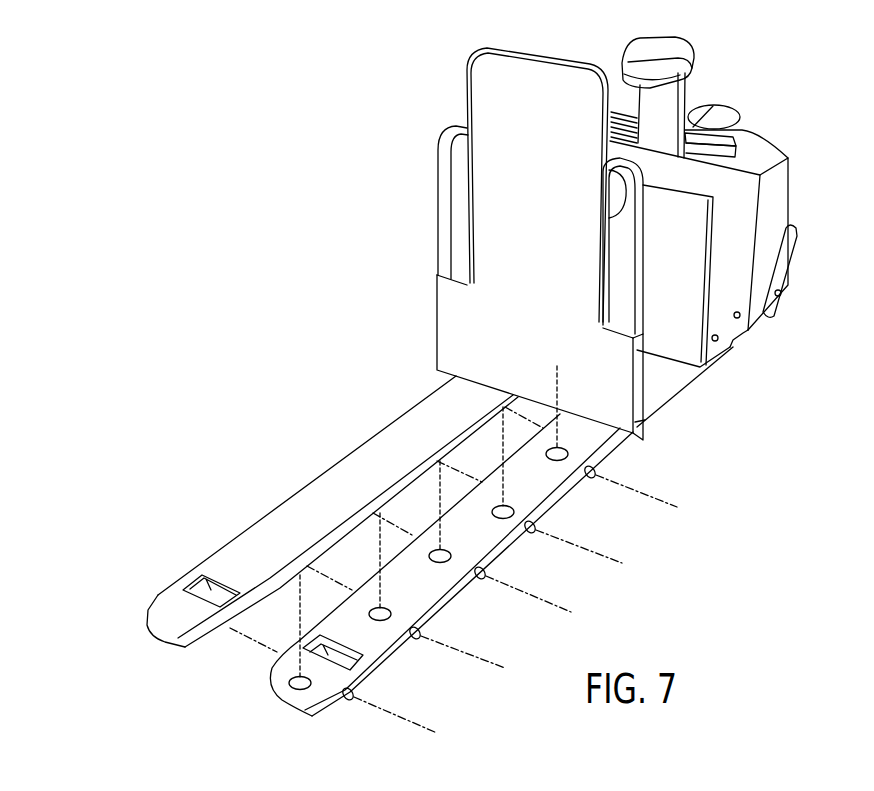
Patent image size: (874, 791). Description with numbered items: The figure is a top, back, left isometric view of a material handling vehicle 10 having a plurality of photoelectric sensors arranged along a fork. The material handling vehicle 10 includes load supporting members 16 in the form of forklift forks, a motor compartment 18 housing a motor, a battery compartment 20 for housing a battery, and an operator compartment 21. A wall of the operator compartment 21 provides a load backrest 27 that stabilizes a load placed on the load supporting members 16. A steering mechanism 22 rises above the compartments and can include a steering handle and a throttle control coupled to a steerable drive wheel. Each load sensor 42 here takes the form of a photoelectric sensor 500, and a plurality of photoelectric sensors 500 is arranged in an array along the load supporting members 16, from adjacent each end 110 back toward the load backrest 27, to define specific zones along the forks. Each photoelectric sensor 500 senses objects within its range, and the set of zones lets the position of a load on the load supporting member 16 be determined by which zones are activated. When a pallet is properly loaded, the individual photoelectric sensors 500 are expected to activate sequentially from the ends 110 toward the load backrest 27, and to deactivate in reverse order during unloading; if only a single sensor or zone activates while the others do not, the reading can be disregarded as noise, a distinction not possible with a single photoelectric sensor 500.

The material handling vehicle 10 is at (574, 34).
The steering mechanism 22 is at (702, 50).
The motor compartment 18 is at (778, 186).
The load backrest 27 is at (484, 214).
The battery compartment 20 is at (724, 316).
The operator compartment 21 is at (658, 381).
The load supporting members 16 is at (284, 522).
The end 110 is at (138, 637).
The photoelectric sensor 500 is at (552, 460).
The load sensor 42 is at (620, 470).